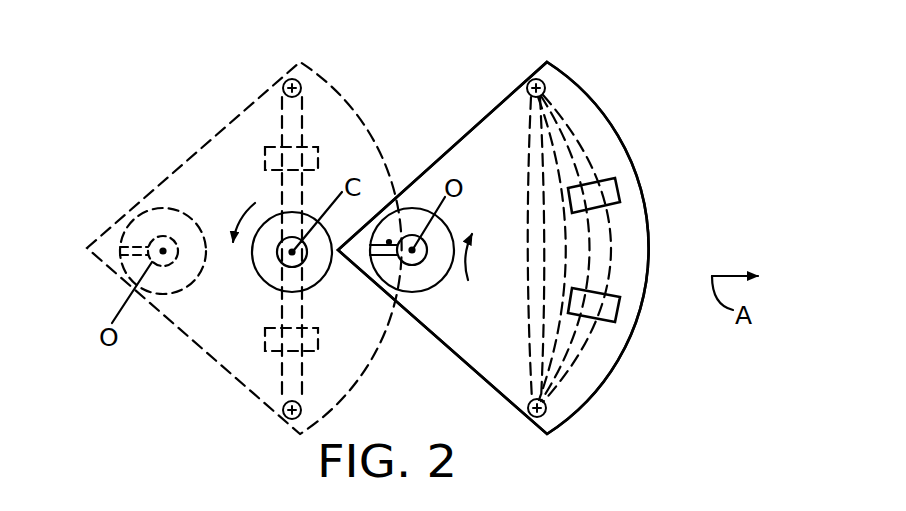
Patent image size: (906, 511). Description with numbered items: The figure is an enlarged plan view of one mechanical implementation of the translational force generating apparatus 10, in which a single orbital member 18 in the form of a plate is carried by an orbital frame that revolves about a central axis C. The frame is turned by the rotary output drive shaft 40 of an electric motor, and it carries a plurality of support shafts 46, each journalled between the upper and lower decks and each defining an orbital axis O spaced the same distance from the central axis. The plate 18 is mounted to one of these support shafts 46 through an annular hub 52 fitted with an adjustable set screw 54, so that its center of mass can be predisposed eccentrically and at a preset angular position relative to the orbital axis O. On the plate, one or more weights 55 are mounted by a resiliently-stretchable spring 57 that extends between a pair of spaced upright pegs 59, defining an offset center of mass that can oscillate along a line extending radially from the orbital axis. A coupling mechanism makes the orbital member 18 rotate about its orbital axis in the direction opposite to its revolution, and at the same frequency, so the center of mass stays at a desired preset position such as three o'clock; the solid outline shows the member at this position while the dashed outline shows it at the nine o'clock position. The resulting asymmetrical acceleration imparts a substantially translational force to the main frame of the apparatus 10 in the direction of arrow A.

The translational force generating apparatus 10 is at (499, 38).
The orbital member 18 is at (594, 96).
The rotary output drive shaft 40 is at (281, 258).
The support shafts 46 is at (416, 267).
The annular hub 52 is at (403, 290).
The adjustable set screw 54 is at (389, 241).
The weights 55 is at (247, 117).
The spring 57 is at (303, 116).
The pegs 59 is at (305, 77).